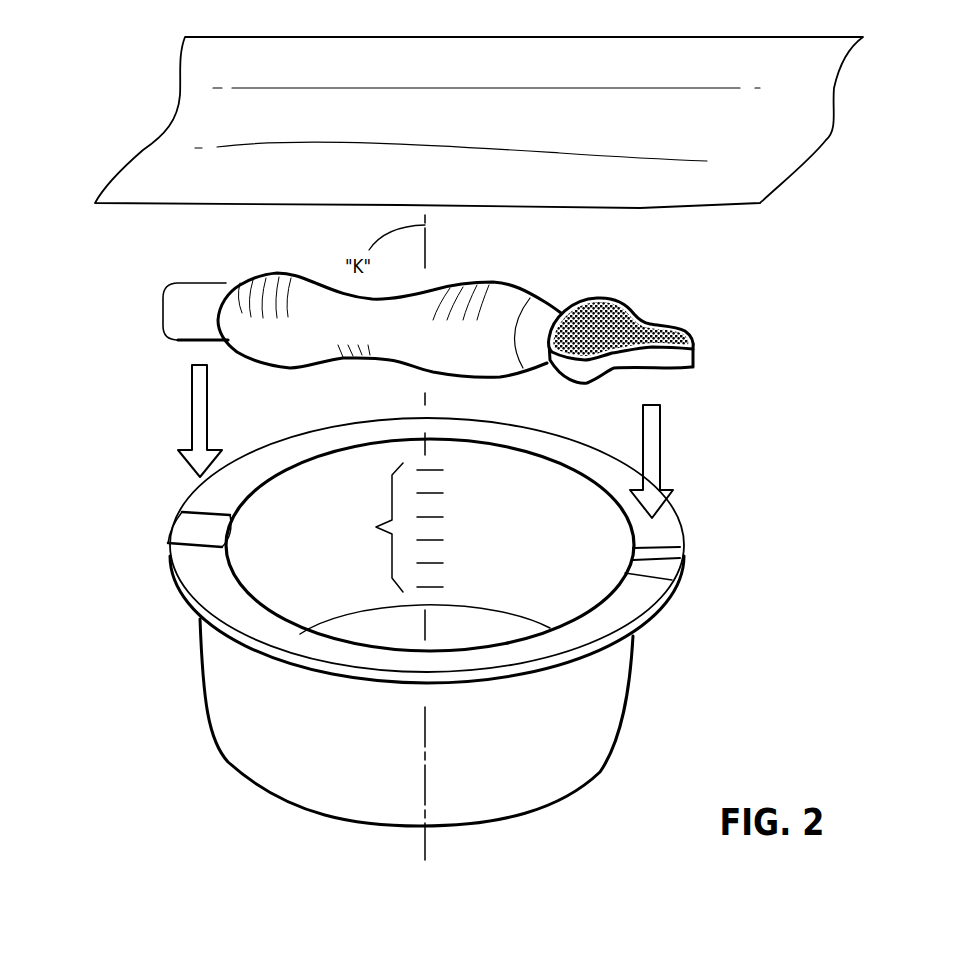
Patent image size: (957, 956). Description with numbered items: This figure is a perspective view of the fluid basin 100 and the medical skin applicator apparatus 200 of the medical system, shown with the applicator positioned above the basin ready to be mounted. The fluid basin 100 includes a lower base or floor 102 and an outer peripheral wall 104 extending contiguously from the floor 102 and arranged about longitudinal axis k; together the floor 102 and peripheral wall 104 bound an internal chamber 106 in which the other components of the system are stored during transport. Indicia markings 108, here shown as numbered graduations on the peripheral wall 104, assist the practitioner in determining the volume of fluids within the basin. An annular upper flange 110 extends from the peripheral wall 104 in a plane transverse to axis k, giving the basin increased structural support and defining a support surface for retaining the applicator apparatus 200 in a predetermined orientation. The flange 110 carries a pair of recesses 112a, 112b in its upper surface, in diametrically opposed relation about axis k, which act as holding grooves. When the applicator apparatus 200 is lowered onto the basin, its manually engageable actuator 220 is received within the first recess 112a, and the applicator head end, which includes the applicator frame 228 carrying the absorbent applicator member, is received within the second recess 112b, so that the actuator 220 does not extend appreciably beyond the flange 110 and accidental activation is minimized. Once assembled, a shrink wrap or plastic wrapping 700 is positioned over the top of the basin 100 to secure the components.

The shrink wrap or plastic wrapping 700 is at (785, 135).
The medical skin applicator apparatus 200 is at (518, 278).
The manually engageable actuator 220 is at (197, 290).
The applicator frame 228 is at (653, 327).
The fluid basin 100 is at (450, 609).
The lower base or floor 102 is at (457, 636).
The outer peripheral wall 104 is at (510, 741).
The internal chamber 106 is at (282, 588).
The indicia markings 108 is at (373, 523).
The upper flange 110 is at (638, 600).
The first recess 112a is at (200, 537).
The second recess 112b is at (663, 567).